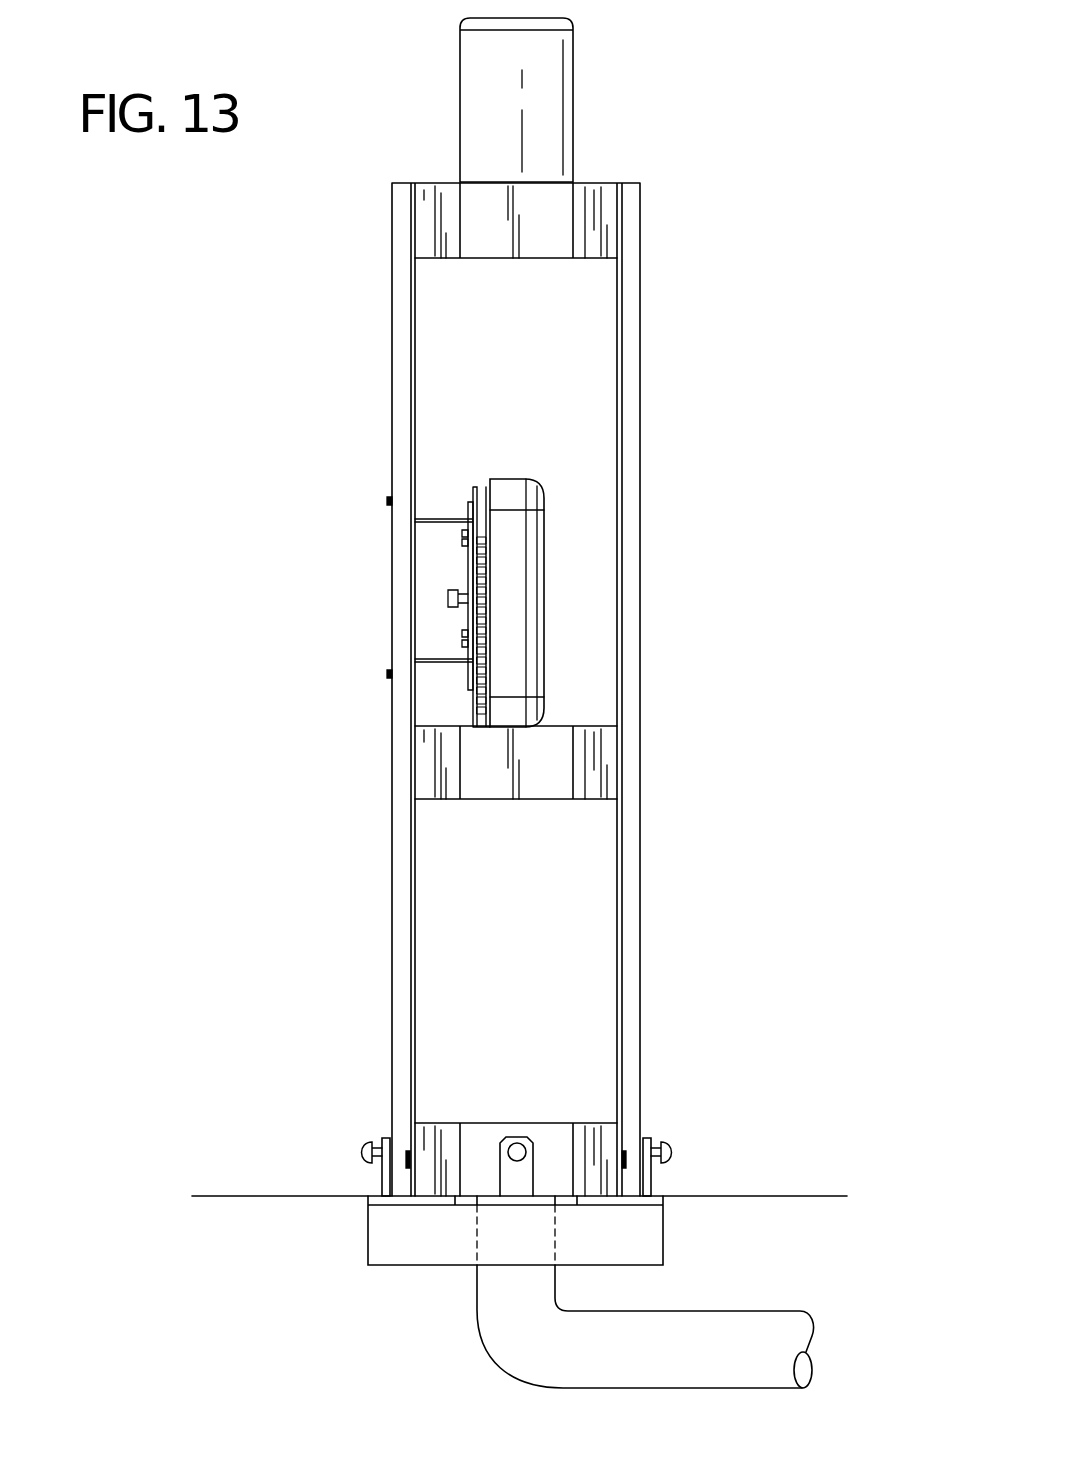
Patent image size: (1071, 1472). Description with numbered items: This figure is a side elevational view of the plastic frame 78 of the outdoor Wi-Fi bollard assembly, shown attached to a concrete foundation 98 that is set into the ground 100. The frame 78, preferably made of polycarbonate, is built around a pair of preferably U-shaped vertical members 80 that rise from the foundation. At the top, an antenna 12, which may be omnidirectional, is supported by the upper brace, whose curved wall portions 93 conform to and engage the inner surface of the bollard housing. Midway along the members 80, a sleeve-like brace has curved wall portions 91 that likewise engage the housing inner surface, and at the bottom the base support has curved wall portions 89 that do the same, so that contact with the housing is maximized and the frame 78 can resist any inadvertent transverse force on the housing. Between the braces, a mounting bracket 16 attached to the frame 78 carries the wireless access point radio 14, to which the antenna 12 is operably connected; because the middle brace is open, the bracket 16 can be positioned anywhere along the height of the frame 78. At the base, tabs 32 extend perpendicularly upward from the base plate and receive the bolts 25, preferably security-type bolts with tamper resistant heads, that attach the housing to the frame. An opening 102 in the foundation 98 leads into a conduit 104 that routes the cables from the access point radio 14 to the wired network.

The antenna 12 is at (545, 98).
The wireless access point radio 14 is at (510, 615).
The mounting bracket 16 is at (430, 522).
The bolts 25 is at (363, 1152).
The tabs 32 is at (522, 1178).
The frame 78 is at (683, 380).
The members 80 is at (403, 905).
The curved wall portions 89 is at (443, 1135).
The curved wall portions 91 is at (423, 763).
The curved wall portions 93 is at (428, 221).
The concrete foundation 98 is at (380, 1241).
The ground 100 is at (210, 1196).
The opening 102 is at (557, 1230).
The conduit 104 is at (752, 1323).